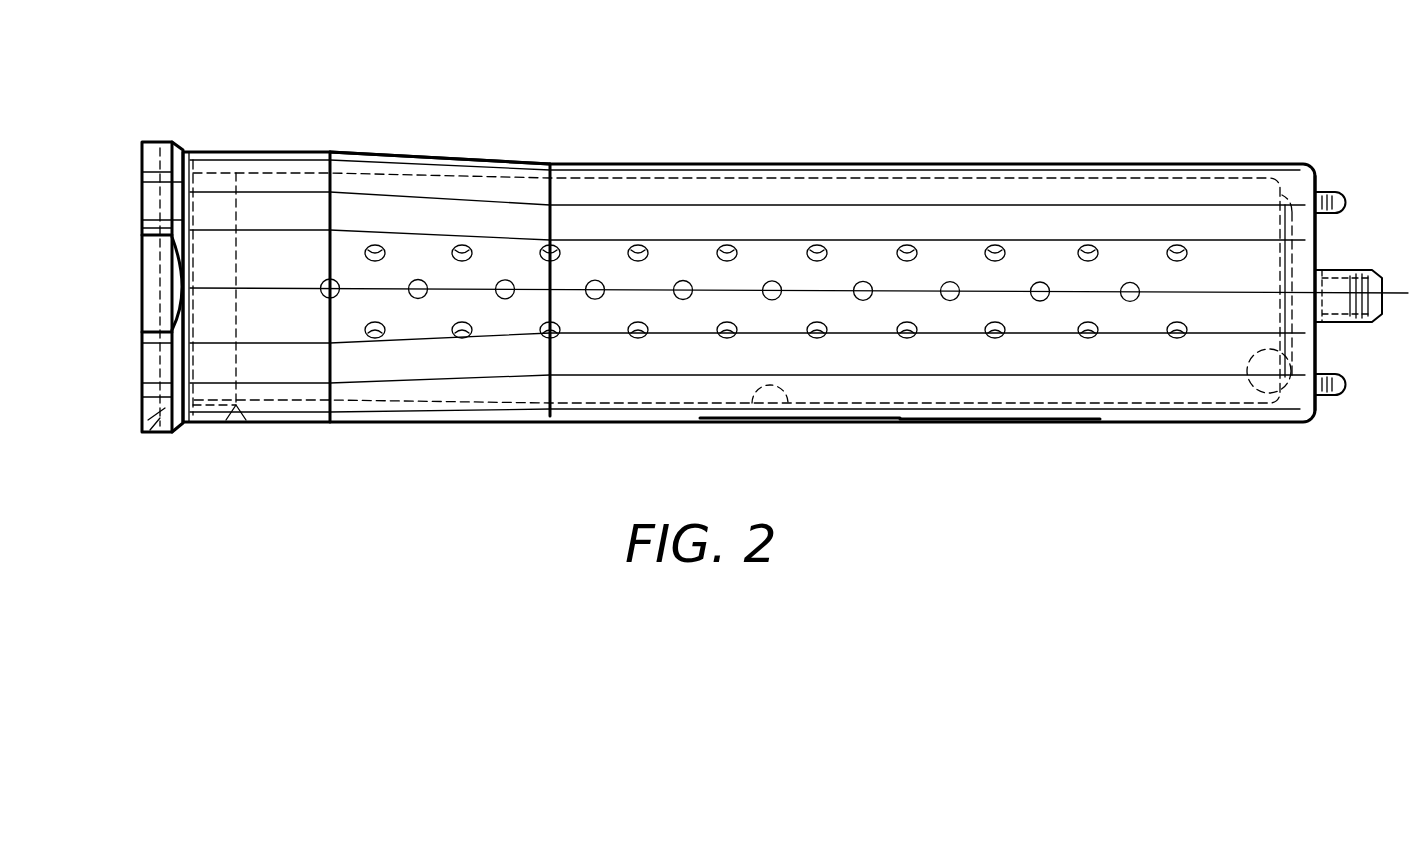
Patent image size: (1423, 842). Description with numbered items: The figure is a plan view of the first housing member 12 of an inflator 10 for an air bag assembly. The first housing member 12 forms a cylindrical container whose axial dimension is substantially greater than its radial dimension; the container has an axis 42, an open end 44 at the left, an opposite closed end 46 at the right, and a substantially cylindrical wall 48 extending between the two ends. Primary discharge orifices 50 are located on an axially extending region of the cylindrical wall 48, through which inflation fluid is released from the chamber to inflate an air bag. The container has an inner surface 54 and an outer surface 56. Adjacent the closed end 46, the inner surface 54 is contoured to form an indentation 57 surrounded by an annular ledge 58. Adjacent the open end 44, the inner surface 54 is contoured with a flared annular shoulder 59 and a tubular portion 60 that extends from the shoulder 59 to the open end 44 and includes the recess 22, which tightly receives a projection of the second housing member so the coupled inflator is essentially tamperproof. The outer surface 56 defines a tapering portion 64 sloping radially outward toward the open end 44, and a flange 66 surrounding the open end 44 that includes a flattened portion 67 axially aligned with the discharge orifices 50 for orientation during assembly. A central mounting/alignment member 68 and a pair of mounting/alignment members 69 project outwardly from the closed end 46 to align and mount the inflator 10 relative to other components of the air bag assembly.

The inflator 10 is at (896, 118).
The first housing member 12 is at (1134, 164).
The recess 22 is at (150, 433).
The axis 42 is at (1405, 297).
The open end 44 is at (140, 320).
The closed end 46 is at (1318, 237).
The cylindrical wall 48 is at (947, 420).
The primary discharge orifices 50 is at (817, 328).
The inner surface 54 is at (752, 418).
The outer surface 56 is at (806, 420).
The indentation 57 is at (1287, 330).
The annular ledge 58 is at (1265, 410).
The flared annular shoulder 59 is at (238, 402).
The tubular portion 60 is at (206, 407).
The tapering portion 64 is at (465, 153).
The flange 66 is at (158, 150).
The flattened portion 67 is at (166, 302).
The central mounting/alignment member 68 is at (1353, 270).
The mounting/alignment members 69 is at (1328, 192).